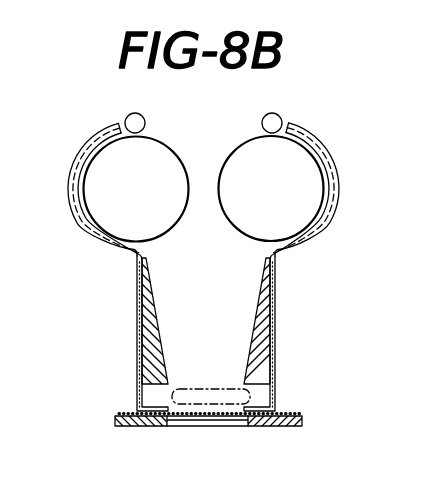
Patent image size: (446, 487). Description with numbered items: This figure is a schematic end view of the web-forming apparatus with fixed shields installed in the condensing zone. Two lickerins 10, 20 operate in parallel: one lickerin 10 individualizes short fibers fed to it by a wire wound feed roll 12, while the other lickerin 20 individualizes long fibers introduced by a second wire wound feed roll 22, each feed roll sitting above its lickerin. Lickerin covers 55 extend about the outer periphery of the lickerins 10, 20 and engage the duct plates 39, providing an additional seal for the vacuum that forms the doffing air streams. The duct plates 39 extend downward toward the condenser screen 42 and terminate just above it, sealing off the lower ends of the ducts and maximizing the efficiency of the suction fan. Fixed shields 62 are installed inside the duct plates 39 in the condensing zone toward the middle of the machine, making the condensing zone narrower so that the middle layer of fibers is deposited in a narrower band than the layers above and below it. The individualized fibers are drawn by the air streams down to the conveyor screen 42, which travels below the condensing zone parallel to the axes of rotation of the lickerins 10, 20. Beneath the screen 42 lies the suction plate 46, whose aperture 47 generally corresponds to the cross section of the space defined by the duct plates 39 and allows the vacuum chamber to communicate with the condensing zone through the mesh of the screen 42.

The lickerin 10 is at (88, 183).
The wire wound feed roll 12 is at (127, 117).
The lickerin 20 is at (313, 183).
The second wire wound feed roll 22 is at (283, 118).
The lickerin cover 55 is at (87, 235).
The duct plate 39 is at (138, 293).
The fixed shield 62 is at (260, 340).
The condenser screen 42 is at (293, 413).
The suction plate 46 is at (115, 421).
The aperture 47 is at (178, 424).